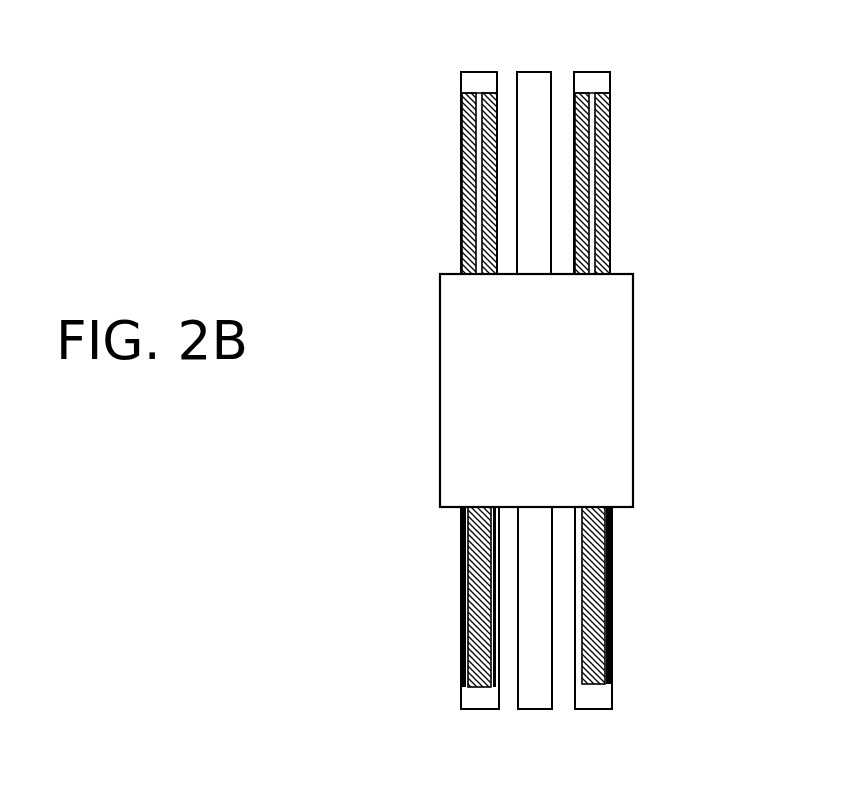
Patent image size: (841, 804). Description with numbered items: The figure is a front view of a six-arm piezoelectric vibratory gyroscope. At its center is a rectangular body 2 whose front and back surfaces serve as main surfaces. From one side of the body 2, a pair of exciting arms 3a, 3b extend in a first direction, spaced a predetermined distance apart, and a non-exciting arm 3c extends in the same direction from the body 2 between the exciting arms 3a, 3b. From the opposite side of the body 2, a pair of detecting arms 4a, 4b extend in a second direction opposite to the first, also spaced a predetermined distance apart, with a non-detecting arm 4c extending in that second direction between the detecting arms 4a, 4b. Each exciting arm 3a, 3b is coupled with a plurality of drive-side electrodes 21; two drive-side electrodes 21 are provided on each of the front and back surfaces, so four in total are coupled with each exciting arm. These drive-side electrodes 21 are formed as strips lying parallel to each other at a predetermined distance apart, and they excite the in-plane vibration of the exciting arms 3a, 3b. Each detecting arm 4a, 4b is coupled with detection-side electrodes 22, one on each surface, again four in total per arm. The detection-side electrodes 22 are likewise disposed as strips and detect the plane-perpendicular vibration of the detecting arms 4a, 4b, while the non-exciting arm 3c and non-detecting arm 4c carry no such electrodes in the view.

The body 2 is at (616, 392).
The exciting arm 3a is at (473, 80).
The exciting arm 3b is at (594, 80).
The non-exciting arm 3c is at (536, 80).
The detecting arm 4a is at (477, 698).
The detecting arm 4b is at (594, 698).
The non-detecting arm 4c is at (536, 698).
The drive-side electrode 21 is at (462, 124).
The detection-side electrode 22 is at (462, 540).